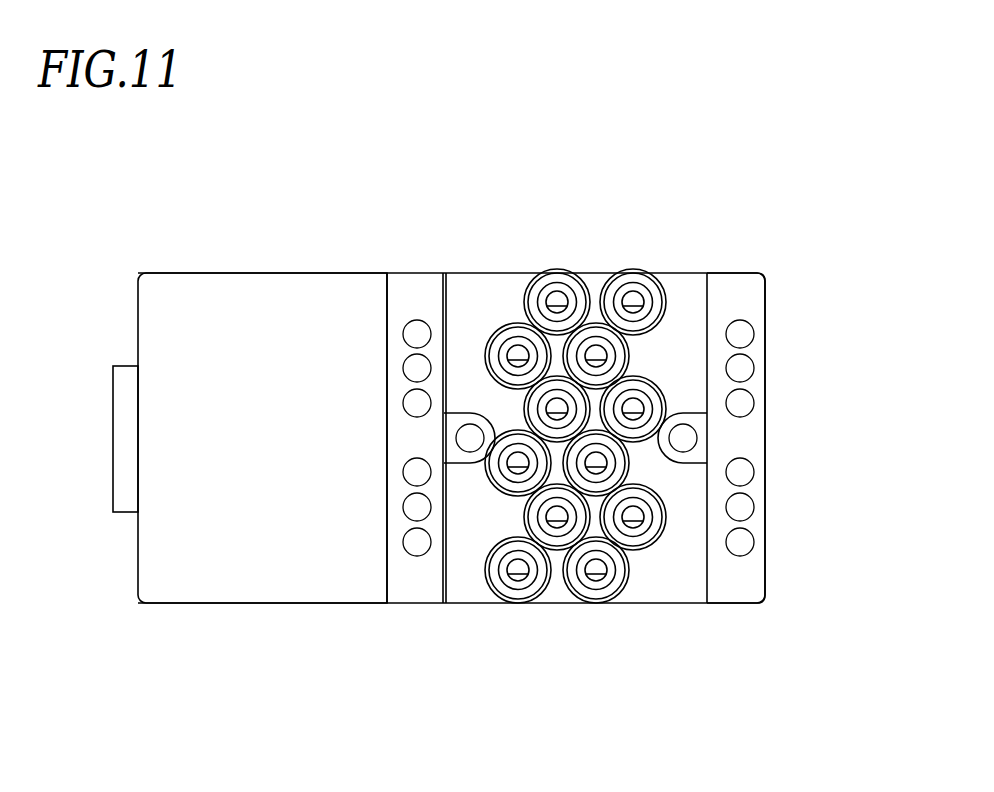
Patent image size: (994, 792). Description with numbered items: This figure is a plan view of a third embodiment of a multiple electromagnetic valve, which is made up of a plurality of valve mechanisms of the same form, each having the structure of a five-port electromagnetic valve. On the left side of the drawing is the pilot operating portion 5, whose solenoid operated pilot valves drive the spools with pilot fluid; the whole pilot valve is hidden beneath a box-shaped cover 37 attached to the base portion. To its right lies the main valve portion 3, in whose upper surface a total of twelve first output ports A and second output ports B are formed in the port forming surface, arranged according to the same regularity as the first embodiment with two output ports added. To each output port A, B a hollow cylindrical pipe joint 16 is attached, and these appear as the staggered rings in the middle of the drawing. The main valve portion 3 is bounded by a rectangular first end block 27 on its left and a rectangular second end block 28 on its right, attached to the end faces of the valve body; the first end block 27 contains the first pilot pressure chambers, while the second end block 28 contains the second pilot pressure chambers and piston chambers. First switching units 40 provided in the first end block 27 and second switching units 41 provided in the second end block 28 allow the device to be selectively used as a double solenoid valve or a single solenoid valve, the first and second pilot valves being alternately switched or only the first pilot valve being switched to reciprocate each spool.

The main valve portion 3 is at (610, 192).
The pilot operating portion 5 is at (250, 232).
The pipe joint 16 is at (532, 282).
The first end block 27 is at (400, 593).
The second end block 28 is at (742, 432).
The cover 37 is at (222, 572).
The first switching unit 40 is at (417, 548).
The second switching unit 41 is at (417, 334).
The first output port A is at (560, 302).
The second output port B is at (633, 302).